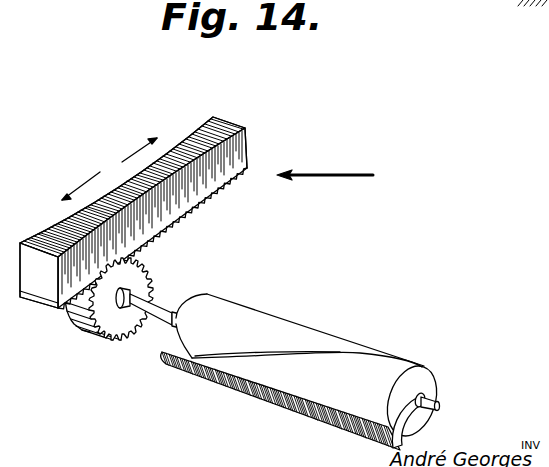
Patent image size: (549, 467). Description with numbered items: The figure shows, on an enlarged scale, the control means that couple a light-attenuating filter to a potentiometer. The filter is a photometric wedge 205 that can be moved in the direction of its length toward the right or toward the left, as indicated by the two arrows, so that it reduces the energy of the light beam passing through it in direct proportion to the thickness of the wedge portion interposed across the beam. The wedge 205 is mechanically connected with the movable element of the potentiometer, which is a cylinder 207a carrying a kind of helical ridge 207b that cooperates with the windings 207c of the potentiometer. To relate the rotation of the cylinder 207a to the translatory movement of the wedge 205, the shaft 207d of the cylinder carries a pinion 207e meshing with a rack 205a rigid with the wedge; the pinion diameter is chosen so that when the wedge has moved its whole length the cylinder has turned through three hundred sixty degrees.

The photometric wedge 205 is at (140, 198).
The rack 205a is at (183, 212).
The cylinder 207a is at (317, 366).
The helical ridge 207b is at (273, 358).
The windings 207c is at (217, 373).
The shaft 207d is at (433, 408).
The pinion 207e is at (87, 330).